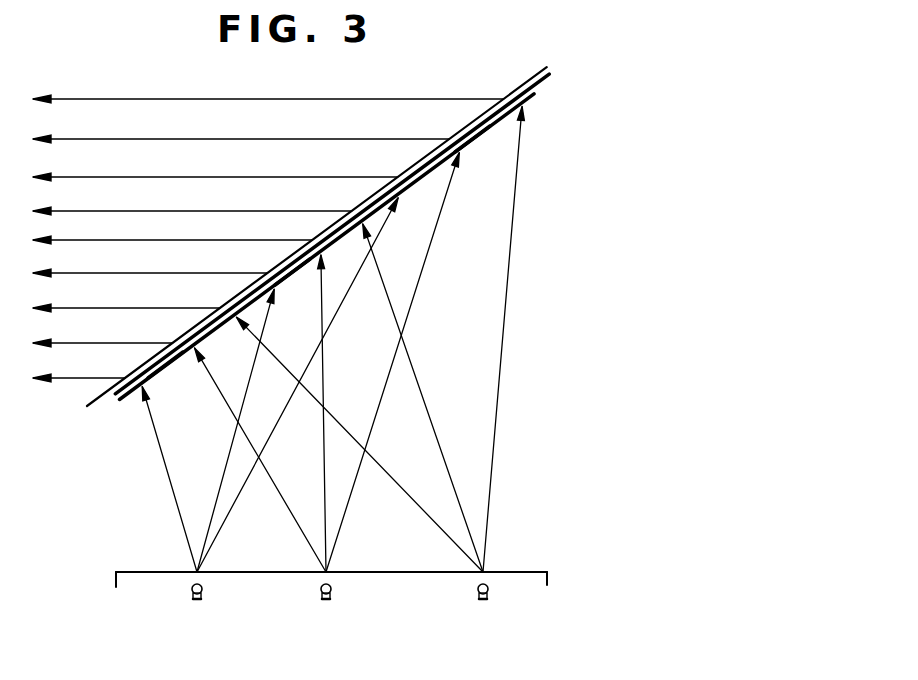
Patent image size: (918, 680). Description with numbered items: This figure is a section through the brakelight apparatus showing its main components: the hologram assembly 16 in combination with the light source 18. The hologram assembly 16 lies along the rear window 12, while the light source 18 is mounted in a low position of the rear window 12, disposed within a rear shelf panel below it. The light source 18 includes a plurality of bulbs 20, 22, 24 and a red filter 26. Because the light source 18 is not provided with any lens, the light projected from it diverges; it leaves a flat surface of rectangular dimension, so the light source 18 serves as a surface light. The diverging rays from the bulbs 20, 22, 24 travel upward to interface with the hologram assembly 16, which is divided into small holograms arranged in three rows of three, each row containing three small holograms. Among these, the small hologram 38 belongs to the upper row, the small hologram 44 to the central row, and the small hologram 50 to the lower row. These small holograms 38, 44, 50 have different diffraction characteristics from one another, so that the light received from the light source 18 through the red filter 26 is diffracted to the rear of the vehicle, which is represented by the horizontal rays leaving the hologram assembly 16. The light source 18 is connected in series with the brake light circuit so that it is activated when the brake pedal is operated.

The rear window 12 is at (512, 92).
The hologram assembly 16 is at (533, 91).
The light source 18 is at (528, 560).
The bulb 20 is at (201, 598).
The bulb 22 is at (331, 598).
The bulb 24 is at (488, 598).
The red filter 26 is at (447, 572).
The small hologram 38 is at (473, 143).
The small hologram 44 is at (293, 272).
The small hologram 50 is at (166, 366).